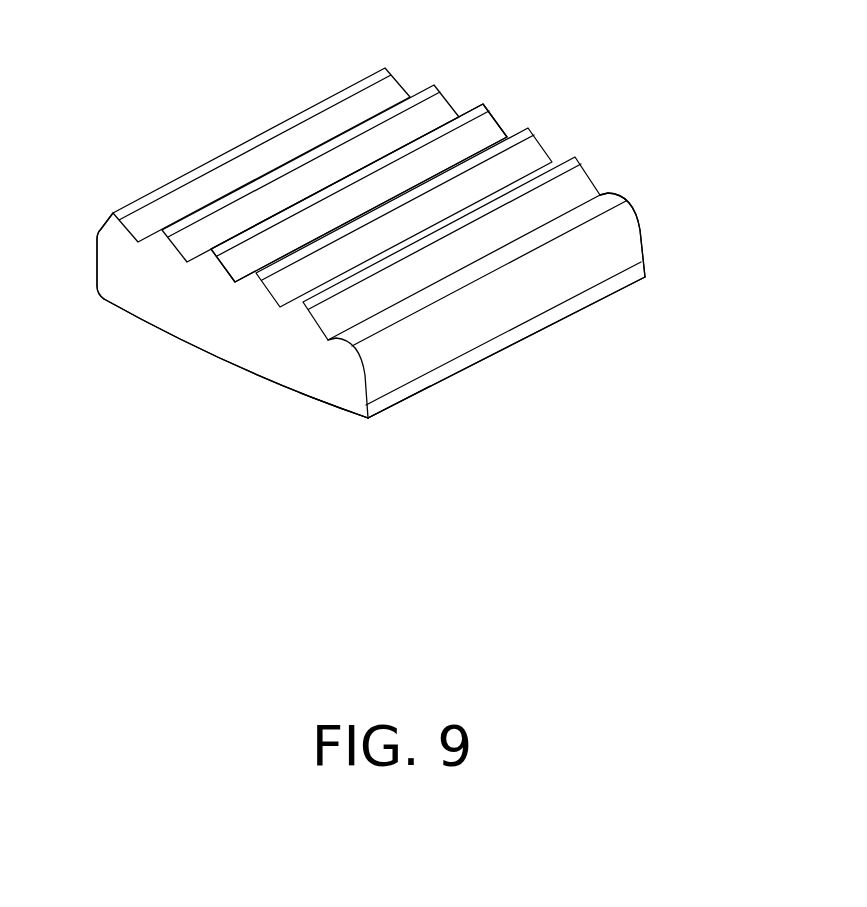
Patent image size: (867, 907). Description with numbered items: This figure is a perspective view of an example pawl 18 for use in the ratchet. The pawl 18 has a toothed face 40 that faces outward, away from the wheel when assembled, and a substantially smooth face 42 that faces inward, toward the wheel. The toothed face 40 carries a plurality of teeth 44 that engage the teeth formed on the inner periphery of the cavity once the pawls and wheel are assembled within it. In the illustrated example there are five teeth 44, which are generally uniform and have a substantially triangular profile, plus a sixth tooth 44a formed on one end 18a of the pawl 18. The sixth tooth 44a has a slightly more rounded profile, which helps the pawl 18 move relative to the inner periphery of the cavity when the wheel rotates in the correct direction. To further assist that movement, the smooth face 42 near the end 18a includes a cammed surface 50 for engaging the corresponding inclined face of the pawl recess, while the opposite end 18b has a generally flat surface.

The pawl 18 is at (384, 251).
The end of the pawl 18a is at (448, 382).
The opposite end 18b is at (98, 262).
The smooth face 42 is at (197, 347).
The toothed face 40 is at (506, 122).
The teeth 44 is at (445, 95).
The sixth tooth 44a is at (634, 202).
The cammed surface 50 is at (338, 413).